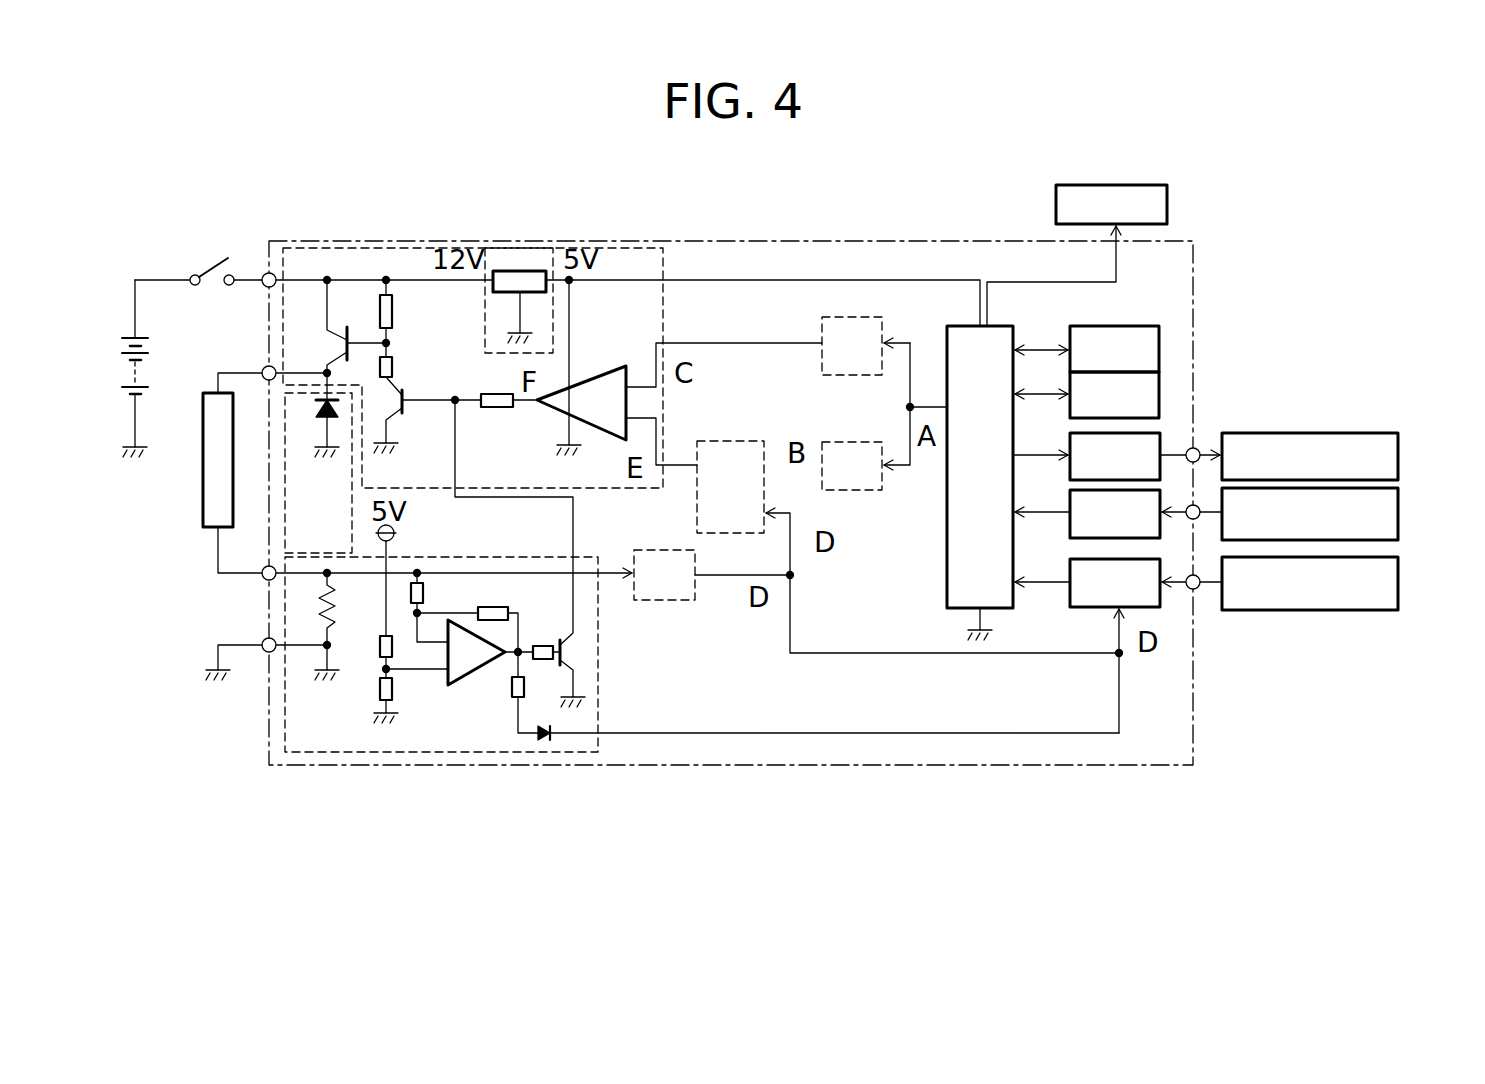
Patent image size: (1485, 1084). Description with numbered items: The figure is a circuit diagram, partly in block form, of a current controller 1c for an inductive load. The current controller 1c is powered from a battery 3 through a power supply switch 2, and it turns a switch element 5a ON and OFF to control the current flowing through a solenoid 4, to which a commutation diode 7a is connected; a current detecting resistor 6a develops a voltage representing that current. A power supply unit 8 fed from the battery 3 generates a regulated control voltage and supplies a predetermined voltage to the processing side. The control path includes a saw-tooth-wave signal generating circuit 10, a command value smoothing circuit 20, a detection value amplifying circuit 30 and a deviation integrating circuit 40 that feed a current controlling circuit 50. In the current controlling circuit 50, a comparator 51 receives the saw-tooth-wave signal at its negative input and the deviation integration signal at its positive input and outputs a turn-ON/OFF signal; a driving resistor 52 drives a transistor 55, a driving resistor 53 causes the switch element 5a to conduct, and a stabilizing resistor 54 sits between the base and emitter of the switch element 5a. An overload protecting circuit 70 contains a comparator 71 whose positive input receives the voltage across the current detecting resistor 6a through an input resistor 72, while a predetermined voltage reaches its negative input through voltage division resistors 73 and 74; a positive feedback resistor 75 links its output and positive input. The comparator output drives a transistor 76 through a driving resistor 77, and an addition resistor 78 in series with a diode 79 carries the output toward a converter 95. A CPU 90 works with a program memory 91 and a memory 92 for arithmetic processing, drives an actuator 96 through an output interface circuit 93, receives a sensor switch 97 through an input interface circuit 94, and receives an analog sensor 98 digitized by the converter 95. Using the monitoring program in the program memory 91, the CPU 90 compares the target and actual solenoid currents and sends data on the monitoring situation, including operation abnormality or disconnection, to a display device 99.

The current controller 1c is at (795, 241).
The power supply switch 2 is at (200, 262).
The battery 3 is at (148, 372).
The solenoid 4 is at (203, 478).
The switch element 5a is at (345, 336).
The current detecting resistor 6a is at (320, 613).
The commutation diode 7a is at (318, 410).
The power supply unit 8 is at (520, 271).
The saw-tooth-wave signal generating circuit 10 is at (858, 317).
The command value smoothing circuit 20 is at (836, 442).
The detection value amplifying circuit 30 is at (676, 600).
The deviation integrating circuit 40 is at (735, 441).
The current controlling circuit 50 is at (645, 248).
The comparator 51 is at (592, 378).
The driving resistor 52 is at (498, 411).
The driving resistor 53 is at (392, 369).
The stabilizing resistor 54 is at (383, 306).
The transistor 55 is at (405, 398).
The overload protecting circuit 70 is at (465, 557).
The comparator 71 is at (482, 682).
The input resistor 72 is at (423, 592).
The voltage division resistor 73 is at (380, 650).
The voltage division resistor 74 is at (393, 691).
The positive feedback resistor 75 is at (500, 607).
The transistor 76 is at (570, 653).
The driving resistor 77 is at (548, 638).
The addition resistor 78 is at (525, 687).
The diode 79 is at (550, 738).
The CPU 90 is at (1000, 326).
The program memory 91 is at (1117, 326).
The memory for processing of arithmetic operations 92 is at (1159, 394).
The output interface circuit 93 is at (1070, 445).
The input interface circuit 94 is at (1070, 502).
The converter 95 is at (1070, 568).
The actuator 96 is at (1398, 455).
The sensor switch 97 is at (1398, 512).
The analog sensor 98 is at (1398, 582).
The display device 99 is at (1167, 205).